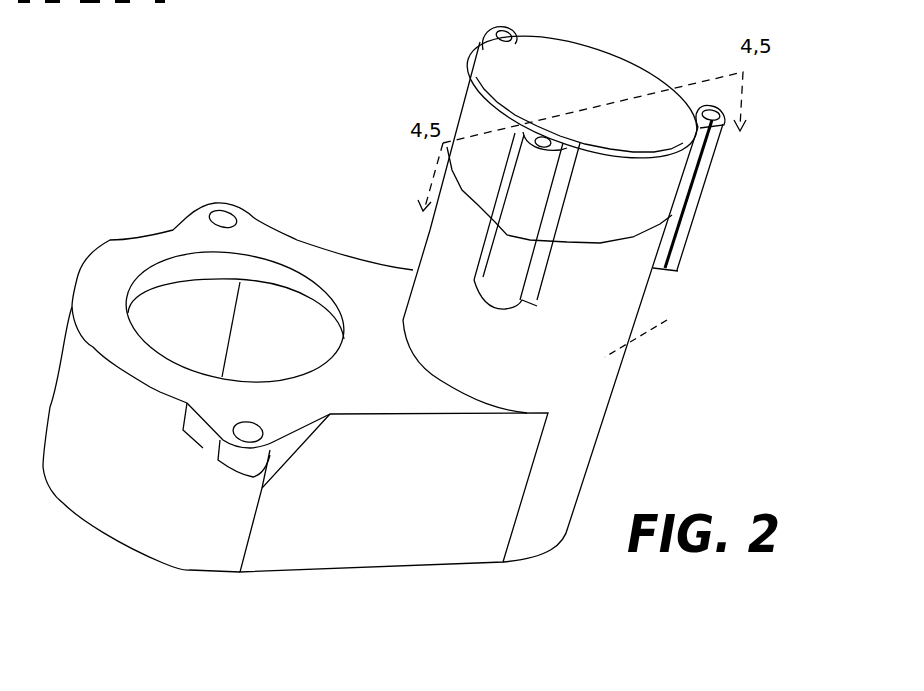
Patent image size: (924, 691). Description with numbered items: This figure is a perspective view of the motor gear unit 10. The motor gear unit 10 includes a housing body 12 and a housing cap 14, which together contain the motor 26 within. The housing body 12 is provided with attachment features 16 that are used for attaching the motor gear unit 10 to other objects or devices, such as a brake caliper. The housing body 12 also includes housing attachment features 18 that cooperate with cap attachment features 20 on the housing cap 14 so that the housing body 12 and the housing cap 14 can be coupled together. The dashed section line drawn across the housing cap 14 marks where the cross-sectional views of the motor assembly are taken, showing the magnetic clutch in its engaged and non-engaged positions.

The motor gear unit 10 is at (388, 78).
The housing body 12 is at (605, 460).
The housing cap 14 is at (571, 30).
The attachment features 16 is at (193, 213).
The housing attachment features 18 is at (501, 264).
The cap attachment features 20 is at (496, 29).
The motor 26 is at (645, 335).